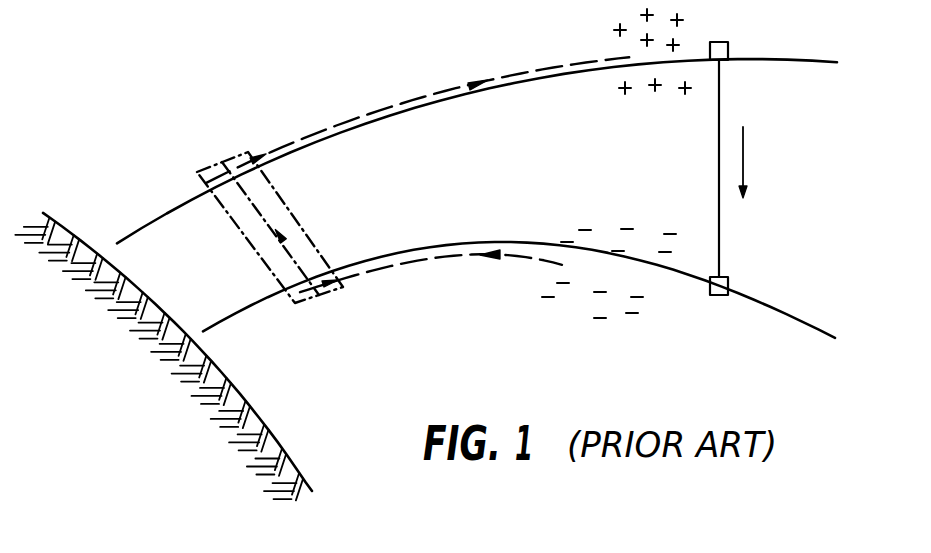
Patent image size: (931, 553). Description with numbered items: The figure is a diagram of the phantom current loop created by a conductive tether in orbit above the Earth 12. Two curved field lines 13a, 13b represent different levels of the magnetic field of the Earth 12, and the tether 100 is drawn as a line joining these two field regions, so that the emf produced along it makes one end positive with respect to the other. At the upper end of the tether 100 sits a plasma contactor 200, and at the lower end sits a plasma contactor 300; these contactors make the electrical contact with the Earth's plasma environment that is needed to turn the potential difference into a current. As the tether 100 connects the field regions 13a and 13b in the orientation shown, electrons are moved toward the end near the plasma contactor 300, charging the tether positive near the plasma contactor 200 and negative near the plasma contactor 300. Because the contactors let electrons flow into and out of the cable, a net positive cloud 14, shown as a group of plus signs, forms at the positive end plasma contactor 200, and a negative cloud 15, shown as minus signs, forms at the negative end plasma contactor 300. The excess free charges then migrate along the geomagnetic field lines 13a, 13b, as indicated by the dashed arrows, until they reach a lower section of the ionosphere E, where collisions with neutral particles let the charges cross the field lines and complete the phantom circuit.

The Earth 12 is at (283, 438).
The field line 13a is at (157, 221).
The field line 13b is at (240, 315).
The net positive cloud 14 is at (660, 99).
The negative cloud 15 is at (594, 323).
The tether 100 is at (718, 163).
The plasma contactor 200 is at (730, 46).
The plasma contactor 300 is at (720, 296).
The lower section of the ionosphere E is at (340, 287).